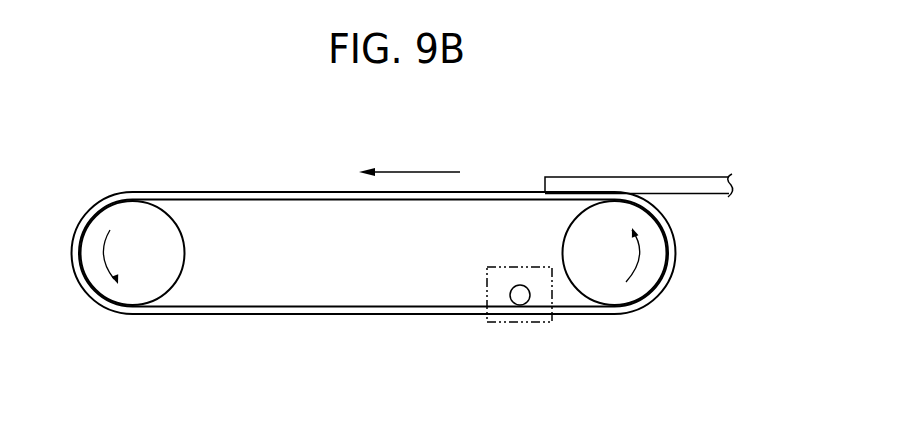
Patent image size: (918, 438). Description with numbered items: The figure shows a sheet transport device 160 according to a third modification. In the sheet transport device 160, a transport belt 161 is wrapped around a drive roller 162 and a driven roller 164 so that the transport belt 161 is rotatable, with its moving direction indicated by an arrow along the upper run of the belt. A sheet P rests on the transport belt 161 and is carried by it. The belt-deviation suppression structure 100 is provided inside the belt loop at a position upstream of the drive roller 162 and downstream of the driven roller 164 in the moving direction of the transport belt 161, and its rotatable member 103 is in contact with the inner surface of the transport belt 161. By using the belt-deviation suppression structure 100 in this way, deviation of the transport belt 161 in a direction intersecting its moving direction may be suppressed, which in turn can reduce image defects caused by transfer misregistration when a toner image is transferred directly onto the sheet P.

The belt-deviation suppression structure 100 is at (479, 275).
The rotatable member 103 is at (521, 285).
The sheet transport device 160 is at (606, 137).
The transport belt 161 is at (497, 190).
The drive roller 162 is at (571, 292).
The driven roller 164 is at (184, 273).
The sheet P is at (652, 176).